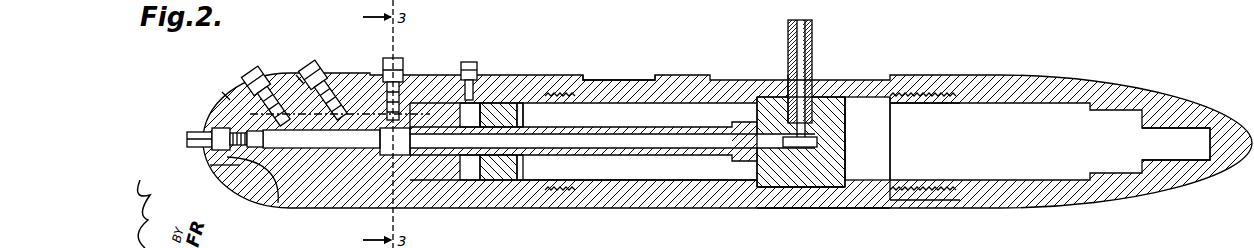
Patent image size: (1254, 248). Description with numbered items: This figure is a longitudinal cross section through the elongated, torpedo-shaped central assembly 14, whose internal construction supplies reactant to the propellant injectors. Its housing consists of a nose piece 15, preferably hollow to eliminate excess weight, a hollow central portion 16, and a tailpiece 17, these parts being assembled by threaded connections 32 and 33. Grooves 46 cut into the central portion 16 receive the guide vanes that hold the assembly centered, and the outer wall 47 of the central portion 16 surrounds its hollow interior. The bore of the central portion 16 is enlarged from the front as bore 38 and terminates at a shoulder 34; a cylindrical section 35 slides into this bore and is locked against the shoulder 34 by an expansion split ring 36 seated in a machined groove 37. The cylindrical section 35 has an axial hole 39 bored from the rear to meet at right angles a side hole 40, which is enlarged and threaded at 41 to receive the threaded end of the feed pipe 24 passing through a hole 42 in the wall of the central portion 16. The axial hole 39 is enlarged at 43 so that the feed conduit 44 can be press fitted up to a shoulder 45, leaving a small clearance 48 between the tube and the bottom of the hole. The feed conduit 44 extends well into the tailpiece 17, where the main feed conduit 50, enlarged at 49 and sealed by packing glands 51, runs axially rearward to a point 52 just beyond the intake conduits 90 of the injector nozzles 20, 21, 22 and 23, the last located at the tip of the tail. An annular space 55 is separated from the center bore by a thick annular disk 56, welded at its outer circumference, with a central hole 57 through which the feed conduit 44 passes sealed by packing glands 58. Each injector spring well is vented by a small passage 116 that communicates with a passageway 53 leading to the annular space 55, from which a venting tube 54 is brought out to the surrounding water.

The central assembly 14 is at (1045, 76).
The nose piece 15 is at (1180, 196).
The central portion 16 is at (808, 208).
The tailpiece 17 is at (520, 175).
The injector nozzle 20 is at (388, 57).
The injector nozzle 21 is at (315, 68).
The injector nozzle 22 is at (252, 72).
The injector nozzle 23 is at (186, 131).
The feed pipe 24 is at (813, 28).
The threaded connection 32 is at (902, 198).
The threaded connection 33 is at (558, 195).
The shoulder 34 is at (738, 192).
The cylindrical section 35 is at (832, 165).
The expansion split ring 36 is at (845, 185).
The machined groove 37 is at (862, 80).
The enlarged bore 38 is at (892, 188).
The axial hole 39 is at (814, 142).
The side hole 40 is at (830, 98).
The threaded enlargement 41 is at (783, 95).
The hole 42 is at (786, 75).
The enlarged bore 43 is at (765, 187).
The feed conduit 44 is at (640, 157).
The shoulder 45 is at (752, 98).
The grooves 46 is at (893, 82).
The cylinder wall 47 is at (656, 76).
The clearance 48 is at (778, 200).
The enlarged bore of main feed conduit 49 is at (405, 158).
The main feed conduit 50 is at (365, 145).
The packing glands 51 is at (402, 98).
The end point of main feed conduit 52 is at (278, 203).
The passageway 53 is at (297, 76).
The venting tube 54 is at (478, 62).
The annular space 55 is at (470, 165).
The annular disk 56 is at (500, 172).
The central hole 57 is at (535, 105).
The packing glands 58 is at (492, 112).
The conduits 90 is at (235, 166).
The venting passage 116 is at (222, 92).